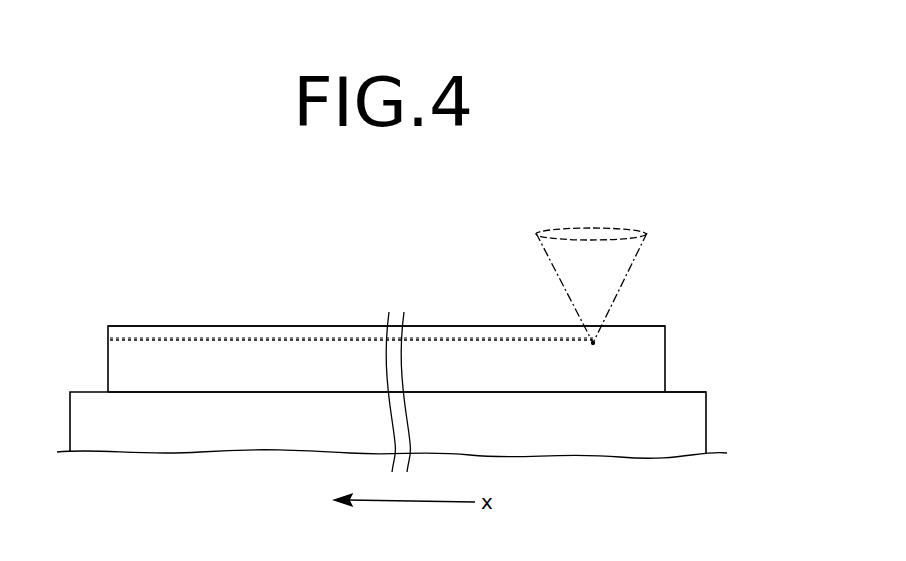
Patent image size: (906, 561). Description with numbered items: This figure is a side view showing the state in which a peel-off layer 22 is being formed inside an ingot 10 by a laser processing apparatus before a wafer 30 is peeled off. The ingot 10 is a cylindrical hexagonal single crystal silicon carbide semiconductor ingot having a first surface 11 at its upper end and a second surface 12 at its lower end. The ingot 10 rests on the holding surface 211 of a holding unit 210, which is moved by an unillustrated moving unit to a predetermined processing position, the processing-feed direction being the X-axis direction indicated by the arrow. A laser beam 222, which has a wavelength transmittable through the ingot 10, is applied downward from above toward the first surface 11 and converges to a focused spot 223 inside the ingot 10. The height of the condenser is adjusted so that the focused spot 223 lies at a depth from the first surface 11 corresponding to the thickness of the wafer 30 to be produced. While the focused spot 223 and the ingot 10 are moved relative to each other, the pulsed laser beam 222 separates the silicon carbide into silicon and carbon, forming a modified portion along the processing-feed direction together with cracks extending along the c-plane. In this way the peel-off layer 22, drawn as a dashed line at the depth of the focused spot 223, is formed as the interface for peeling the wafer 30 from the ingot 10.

The ingot 10 is at (668, 355).
The first surface 11 is at (222, 325).
The second surface 12 is at (212, 392).
The peel-off layer 22 is at (327, 339).
The wafer 30 is at (153, 336).
The holding unit 210 is at (675, 422).
The holding surface 211 is at (687, 394).
The laser beam 222 is at (550, 265).
The focused spot 223 is at (593, 343).